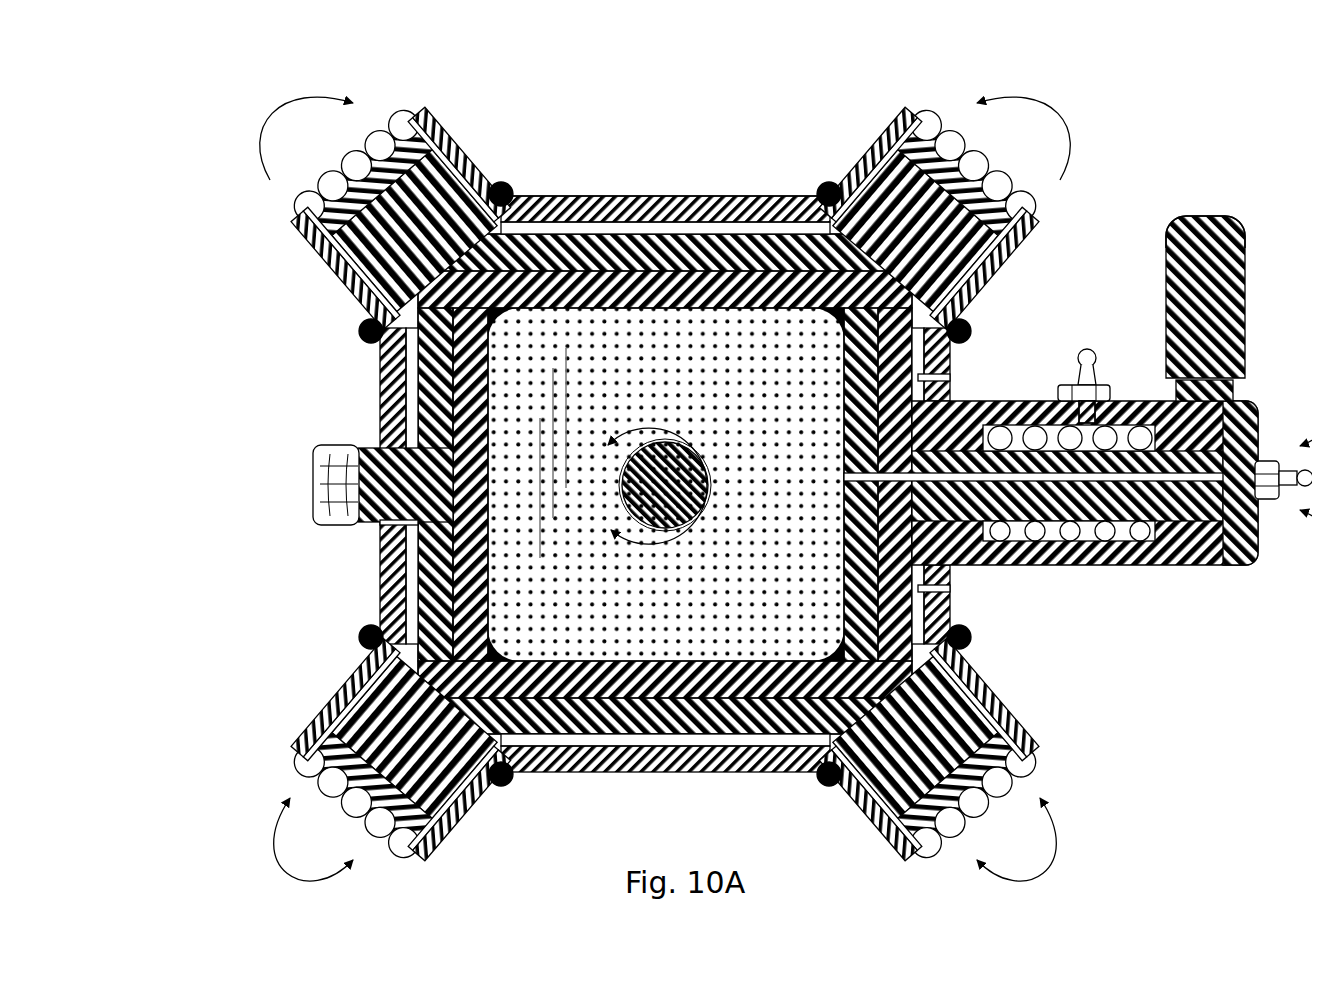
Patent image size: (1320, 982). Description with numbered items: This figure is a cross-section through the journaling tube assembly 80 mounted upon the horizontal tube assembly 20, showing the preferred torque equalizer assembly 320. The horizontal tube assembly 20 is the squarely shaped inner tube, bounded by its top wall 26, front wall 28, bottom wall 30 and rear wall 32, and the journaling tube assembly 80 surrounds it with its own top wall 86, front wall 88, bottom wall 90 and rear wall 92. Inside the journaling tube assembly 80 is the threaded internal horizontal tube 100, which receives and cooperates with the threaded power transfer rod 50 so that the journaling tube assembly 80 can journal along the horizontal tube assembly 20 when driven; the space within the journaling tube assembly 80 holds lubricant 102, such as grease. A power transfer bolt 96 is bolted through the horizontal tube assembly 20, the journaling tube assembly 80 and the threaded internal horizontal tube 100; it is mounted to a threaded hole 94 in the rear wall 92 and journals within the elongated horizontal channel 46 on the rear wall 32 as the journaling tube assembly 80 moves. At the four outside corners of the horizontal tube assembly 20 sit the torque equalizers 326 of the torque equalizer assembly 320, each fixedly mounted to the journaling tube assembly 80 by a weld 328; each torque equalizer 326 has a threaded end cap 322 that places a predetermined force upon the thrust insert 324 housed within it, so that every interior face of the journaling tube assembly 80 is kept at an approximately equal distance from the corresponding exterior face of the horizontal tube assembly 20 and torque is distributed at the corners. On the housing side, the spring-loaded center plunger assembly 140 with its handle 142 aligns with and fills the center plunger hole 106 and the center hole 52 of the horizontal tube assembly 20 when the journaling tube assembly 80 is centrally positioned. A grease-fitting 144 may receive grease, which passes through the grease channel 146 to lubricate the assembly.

The horizontal tube assembly 20 is at (713, 737).
The top wall 26 is at (758, 226).
The front wall 28 is at (921, 582).
The bottom wall 30 is at (665, 731).
The rear wall 32 is at (421, 597).
The elongated horizontal channel 46 is at (404, 382).
The threaded power transfer rod 50 is at (693, 503).
The center hole 52 is at (941, 356).
The journaling tube assembly 80 is at (603, 186).
The top wall 86 is at (651, 188).
The front wall 88 is at (943, 370).
The bottom wall 90 is at (551, 762).
The rear wall 92 is at (372, 408).
The threaded hole 94 is at (374, 516).
The power transfer bolt 96 is at (306, 480).
The threaded internal horizontal tube 100 is at (700, 322).
The lubricant 102 is at (585, 572).
The center plunger hole 106 is at (968, 556).
The center plunger assembly 140 is at (1226, 206).
The handle 142 is at (1196, 212).
The grease-fitting 144 is at (1244, 492).
The grease channel 146 is at (1180, 520).
The torque equalizer assembly 320 is at (391, 175).
The threaded end cap 322 is at (362, 128).
The thrust insert 324 is at (447, 148).
The torque equalizer 326 is at (483, 162).
The weld 328 is at (355, 327).